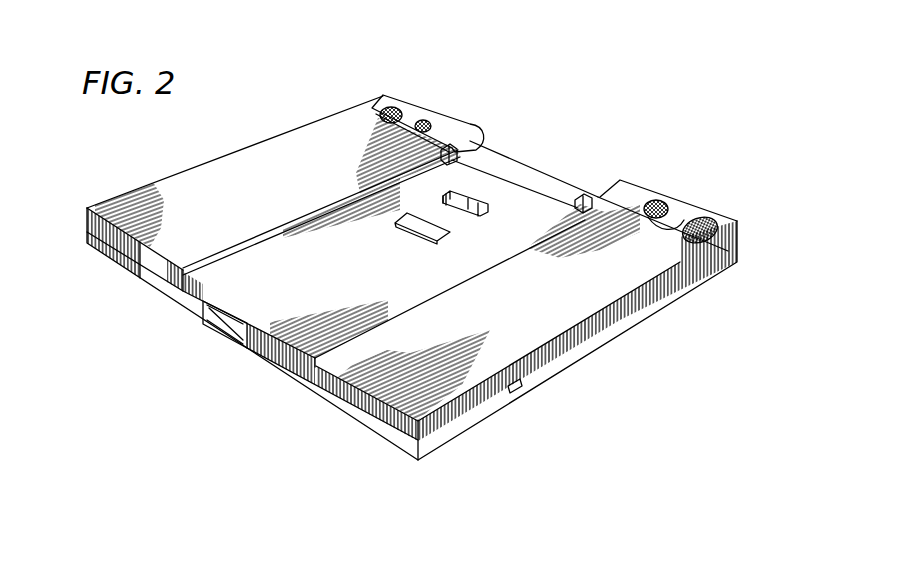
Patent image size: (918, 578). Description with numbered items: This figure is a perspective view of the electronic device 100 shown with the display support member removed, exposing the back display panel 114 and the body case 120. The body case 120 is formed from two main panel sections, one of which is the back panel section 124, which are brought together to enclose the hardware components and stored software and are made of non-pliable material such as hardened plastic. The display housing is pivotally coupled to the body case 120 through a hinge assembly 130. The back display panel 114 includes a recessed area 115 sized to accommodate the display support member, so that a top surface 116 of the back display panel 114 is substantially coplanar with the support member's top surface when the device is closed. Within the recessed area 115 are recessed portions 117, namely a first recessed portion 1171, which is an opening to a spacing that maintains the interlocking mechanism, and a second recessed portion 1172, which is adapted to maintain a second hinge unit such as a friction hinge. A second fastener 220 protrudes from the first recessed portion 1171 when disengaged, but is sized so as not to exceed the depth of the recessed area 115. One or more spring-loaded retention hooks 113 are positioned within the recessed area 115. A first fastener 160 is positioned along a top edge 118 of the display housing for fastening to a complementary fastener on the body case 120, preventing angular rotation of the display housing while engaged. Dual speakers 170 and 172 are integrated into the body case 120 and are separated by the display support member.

The electronic device 100 is at (583, 62).
The spring-loaded retention hooks 113 is at (455, 157).
The back display panel 114 is at (532, 331).
The recessed area 115 is at (486, 242).
The top surface 116 is at (628, 270).
The recessed portions 117 is at (403, 201).
The first recessed portion 1171 is at (486, 206).
The second recessed portion 1172 is at (398, 214).
The top edge 118 is at (116, 237).
The body case 120 is at (454, 428).
The back panel section 124 is at (513, 404).
The hinge assembly 130 is at (572, 153).
The first fastener 160 is at (222, 310).
The speaker 170 is at (412, 121).
The speaker 172 is at (678, 220).
The second fastener 220 is at (428, 204).